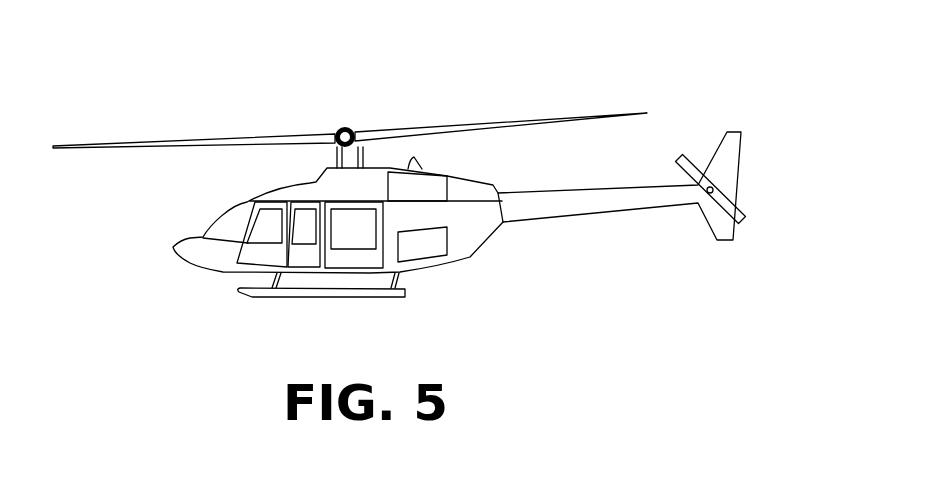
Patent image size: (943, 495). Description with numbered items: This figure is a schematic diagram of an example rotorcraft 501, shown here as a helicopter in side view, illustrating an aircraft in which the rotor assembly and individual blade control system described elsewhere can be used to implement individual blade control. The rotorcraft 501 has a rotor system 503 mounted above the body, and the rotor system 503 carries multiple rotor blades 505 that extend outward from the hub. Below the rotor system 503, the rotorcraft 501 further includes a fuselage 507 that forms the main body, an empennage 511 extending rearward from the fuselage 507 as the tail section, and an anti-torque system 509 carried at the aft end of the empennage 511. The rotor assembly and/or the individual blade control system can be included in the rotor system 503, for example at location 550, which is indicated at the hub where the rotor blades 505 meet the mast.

The rotorcraft 501 is at (183, 96).
The rotor system 503 is at (358, 120).
The rotor blades 505 is at (590, 118).
The fuselage 507 is at (232, 271).
The anti-torque system 509 is at (745, 242).
The empennage 511 is at (577, 218).
The location 550 is at (337, 130).